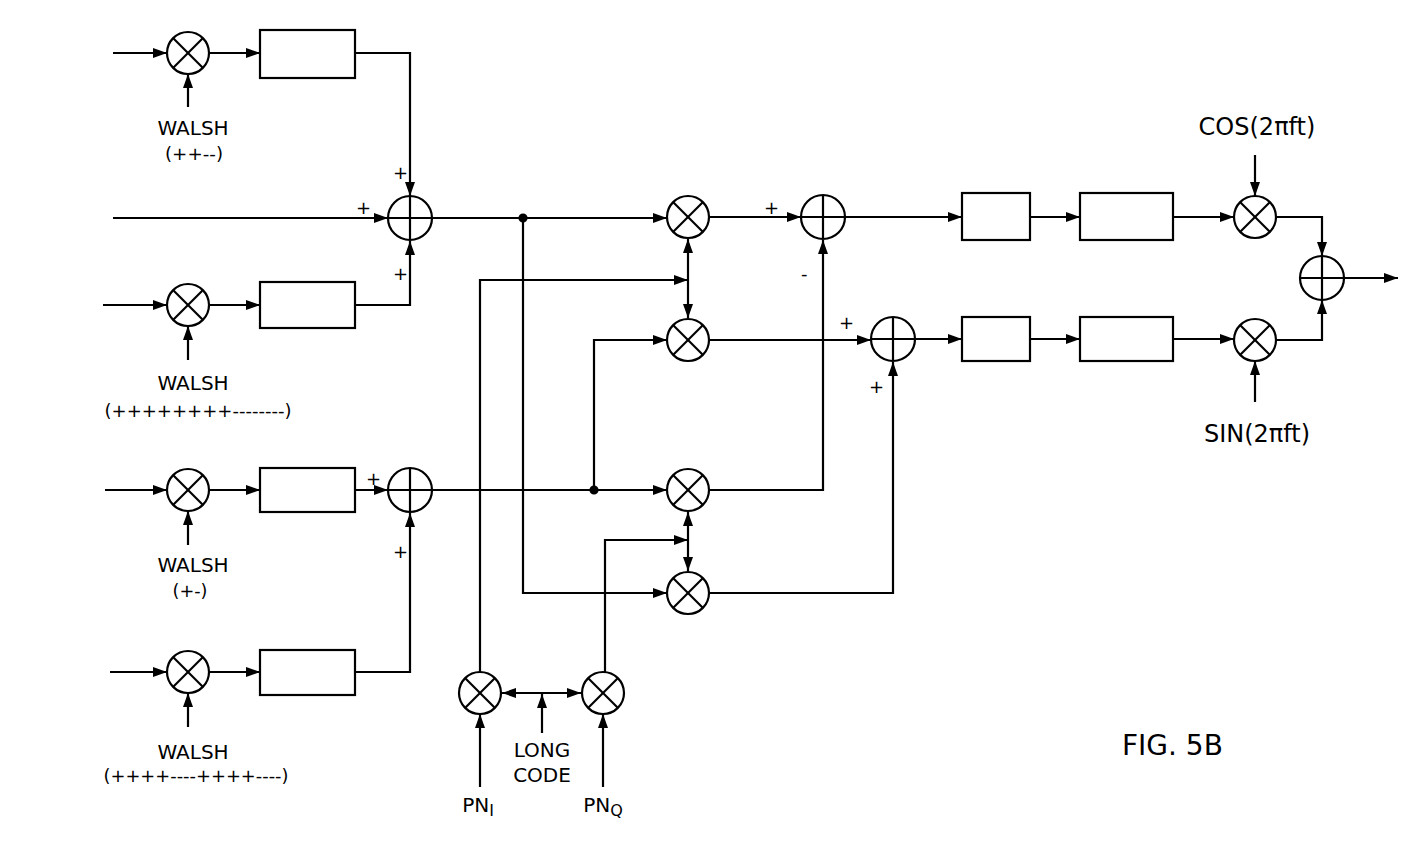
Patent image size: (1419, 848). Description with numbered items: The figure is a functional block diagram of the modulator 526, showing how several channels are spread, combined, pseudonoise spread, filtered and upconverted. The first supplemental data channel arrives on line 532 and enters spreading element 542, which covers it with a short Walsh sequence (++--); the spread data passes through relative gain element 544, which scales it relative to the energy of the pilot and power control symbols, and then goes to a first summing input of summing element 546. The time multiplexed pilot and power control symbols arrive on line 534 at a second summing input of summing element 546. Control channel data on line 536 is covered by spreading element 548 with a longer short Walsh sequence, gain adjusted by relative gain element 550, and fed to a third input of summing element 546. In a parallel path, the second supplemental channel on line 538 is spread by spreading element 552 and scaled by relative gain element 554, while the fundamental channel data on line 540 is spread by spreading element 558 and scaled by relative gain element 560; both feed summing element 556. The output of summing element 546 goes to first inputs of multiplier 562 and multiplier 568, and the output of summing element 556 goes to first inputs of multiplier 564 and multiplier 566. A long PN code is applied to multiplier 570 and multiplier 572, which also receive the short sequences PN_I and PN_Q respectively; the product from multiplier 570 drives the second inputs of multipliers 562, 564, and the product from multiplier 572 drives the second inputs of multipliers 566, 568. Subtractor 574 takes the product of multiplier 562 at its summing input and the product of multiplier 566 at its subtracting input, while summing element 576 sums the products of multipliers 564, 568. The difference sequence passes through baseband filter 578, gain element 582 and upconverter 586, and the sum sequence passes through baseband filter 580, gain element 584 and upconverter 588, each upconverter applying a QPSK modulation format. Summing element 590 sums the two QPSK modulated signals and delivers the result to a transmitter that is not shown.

The modulator 526 is at (952, 96).
The line 532 is at (140, 52).
The line 534 is at (225, 217).
The line 536 is at (140, 304).
The line 538 is at (143, 489).
The line 540 is at (143, 671).
The spreading element 542 is at (195, 31).
The relative gain element 544 is at (322, 30).
The summing element 546 is at (426, 203).
The spreading element 548 is at (195, 283).
The relative gain element 550 is at (322, 282).
The spreading element 552 is at (195, 469).
The relative gain element 554 is at (322, 468).
The summing element 556 is at (411, 468).
The spreading element 558 is at (195, 651).
The relative gain element 560 is at (322, 650).
The multiplier 562 is at (690, 196).
The multiplier 564 is at (690, 362).
The multiplier 566 is at (690, 469).
The multiplier 568 is at (690, 615).
The multiplier 570 is at (466, 712).
The multiplier 572 is at (619, 712).
The subtractor 574 is at (823, 195).
The summing element 576 is at (893, 317).
The baseband filter 578 is at (990, 193).
The baseband filter 580 is at (990, 317).
The gain element 582 is at (1125, 193).
The gain element 584 is at (1125, 317).
The upconverter 586 is at (1272, 200).
The upconverter 588 is at (1272, 358).
The summing element 590 is at (1342, 262).